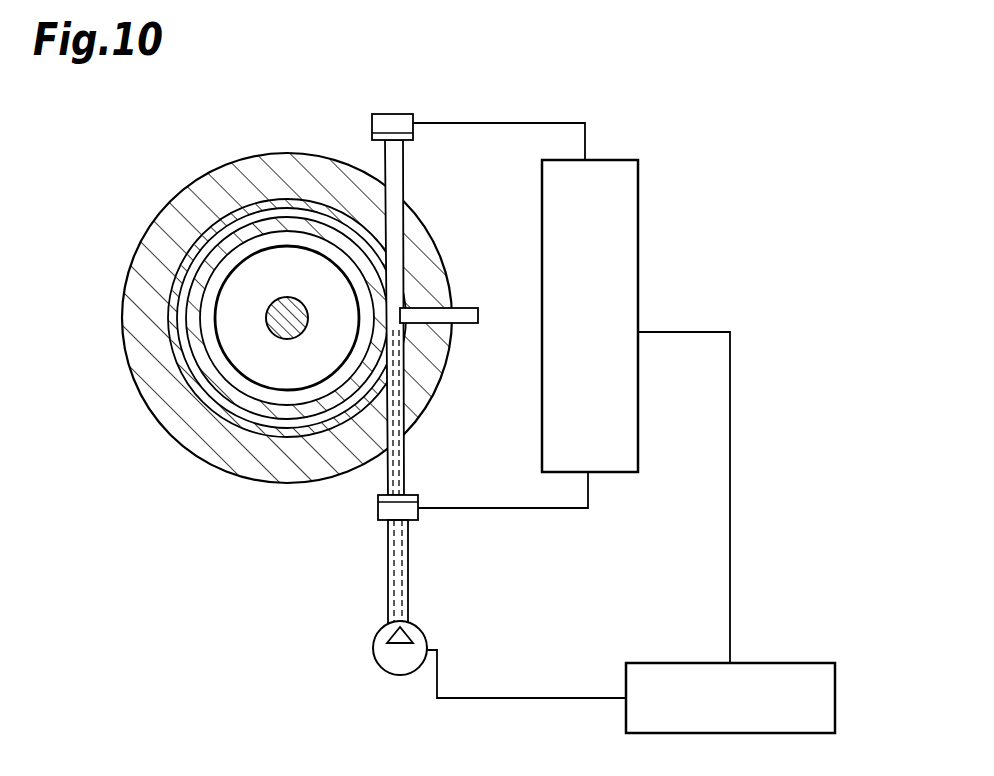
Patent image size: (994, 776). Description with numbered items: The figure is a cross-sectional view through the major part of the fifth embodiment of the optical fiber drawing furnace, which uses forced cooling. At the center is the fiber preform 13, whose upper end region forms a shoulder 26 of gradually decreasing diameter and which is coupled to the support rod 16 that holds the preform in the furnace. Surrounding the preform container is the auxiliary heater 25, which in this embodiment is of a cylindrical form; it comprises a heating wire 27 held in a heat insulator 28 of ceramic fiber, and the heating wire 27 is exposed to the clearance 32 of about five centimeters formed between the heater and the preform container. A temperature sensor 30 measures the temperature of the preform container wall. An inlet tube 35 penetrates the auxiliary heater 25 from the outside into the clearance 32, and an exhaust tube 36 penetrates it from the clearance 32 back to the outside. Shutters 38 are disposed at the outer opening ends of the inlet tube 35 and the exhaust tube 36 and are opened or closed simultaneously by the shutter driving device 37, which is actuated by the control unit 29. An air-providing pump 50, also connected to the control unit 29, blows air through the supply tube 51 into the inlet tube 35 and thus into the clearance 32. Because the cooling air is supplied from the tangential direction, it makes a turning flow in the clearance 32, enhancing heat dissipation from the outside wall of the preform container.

The fiber preform 13 is at (213, 316).
The support rod 16 is at (285, 326).
The auxiliary heater 25 is at (150, 215).
The shoulder 26 is at (287, 258).
The heating wire 27 is at (190, 388).
The heat insulator 28 is at (230, 170).
The control unit 29 is at (806, 663).
The temperature sensor 30 is at (465, 306).
The clearance 32 is at (187, 355).
The inlet tube 35 is at (387, 472).
The exhaust tube 36 is at (404, 172).
The shutter driving device 37 is at (604, 160).
The shutter 38 is at (400, 113).
The air-providing pump 50 is at (427, 640).
The supply tube 51 is at (408, 572).